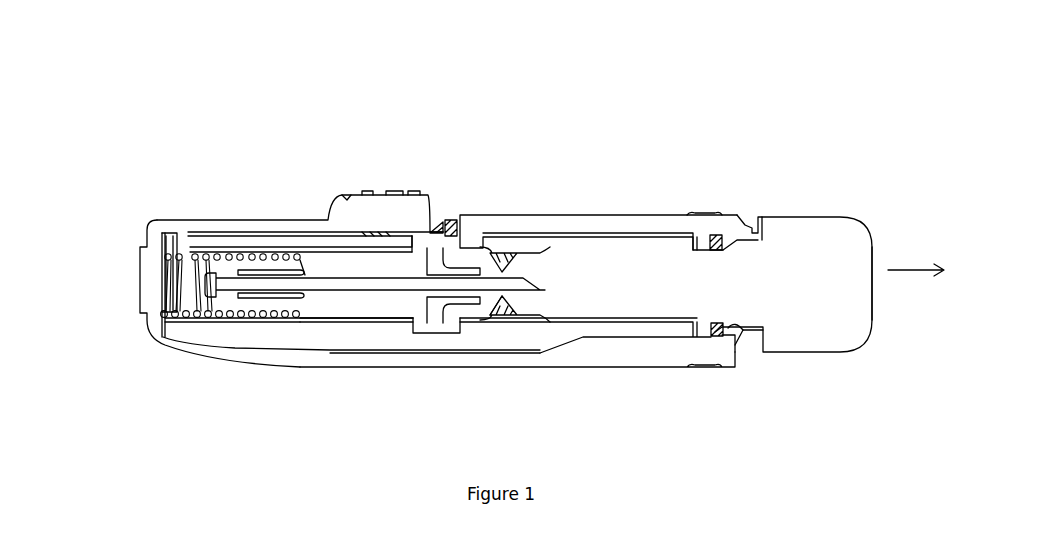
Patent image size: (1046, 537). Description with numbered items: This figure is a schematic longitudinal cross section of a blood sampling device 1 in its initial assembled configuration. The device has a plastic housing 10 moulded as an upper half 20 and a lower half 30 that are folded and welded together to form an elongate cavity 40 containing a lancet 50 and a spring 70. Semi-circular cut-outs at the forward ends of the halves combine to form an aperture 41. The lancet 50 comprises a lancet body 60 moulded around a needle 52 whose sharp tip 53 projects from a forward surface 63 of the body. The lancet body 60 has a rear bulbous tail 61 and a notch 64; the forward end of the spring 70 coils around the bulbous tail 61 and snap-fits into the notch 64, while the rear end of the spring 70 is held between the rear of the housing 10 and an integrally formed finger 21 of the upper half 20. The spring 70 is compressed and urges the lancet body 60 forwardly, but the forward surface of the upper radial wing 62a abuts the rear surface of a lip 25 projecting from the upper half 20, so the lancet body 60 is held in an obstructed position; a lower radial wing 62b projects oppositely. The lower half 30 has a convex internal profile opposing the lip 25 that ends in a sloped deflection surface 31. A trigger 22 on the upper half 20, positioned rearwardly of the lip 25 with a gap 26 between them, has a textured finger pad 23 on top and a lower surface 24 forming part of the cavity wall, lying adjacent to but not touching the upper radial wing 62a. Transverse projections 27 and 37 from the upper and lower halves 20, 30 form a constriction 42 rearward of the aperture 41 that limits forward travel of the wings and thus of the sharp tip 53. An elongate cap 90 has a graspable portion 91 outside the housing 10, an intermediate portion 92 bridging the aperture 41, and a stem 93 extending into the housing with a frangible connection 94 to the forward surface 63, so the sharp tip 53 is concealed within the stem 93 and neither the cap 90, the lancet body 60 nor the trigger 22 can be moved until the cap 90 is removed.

The blood sampling device 1 is at (186, 97).
The housing 10 is at (140, 212).
The upper half 20 is at (668, 222).
The finger 21 is at (180, 250).
The trigger 22 is at (390, 215).
The finger pad 23 is at (369, 196).
The lower surface 24 is at (416, 228).
The lip 25 is at (491, 215).
The gap 26 is at (455, 222).
The transverse projection 27 is at (705, 243).
The lower half 30 is at (517, 387).
The deflection surface 31 is at (563, 347).
The transverse projection 37 is at (705, 327).
The cavity 40 is at (263, 332).
The aperture 41 is at (759, 217).
The constriction 42 is at (728, 333).
The lancet 50 is at (352, 336).
The needle 52 is at (287, 285).
The sharp tip 53 is at (515, 300).
The lancet body 60 is at (391, 310).
The bulbous tail 61 is at (236, 312).
The upper radial wing 62a is at (440, 232).
The lower radial wing 62b is at (442, 333).
The forward surface 63 is at (505, 257).
The notch 64 is at (302, 258).
The spring 70 is at (192, 318).
The elongate cap 90 is at (855, 210).
The graspable portion 91 is at (850, 270).
The intermediate portion 92 is at (740, 312).
The stem 93 is at (645, 268).
The frangible connection 94 is at (502, 297).